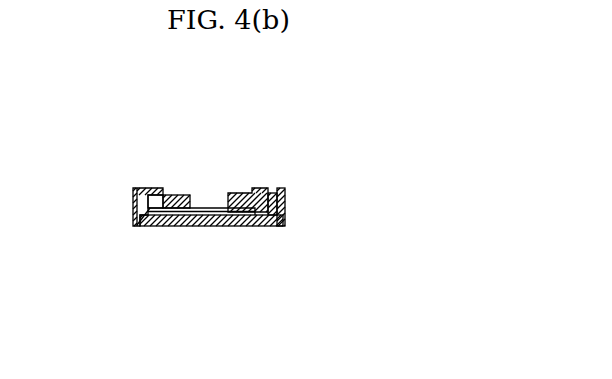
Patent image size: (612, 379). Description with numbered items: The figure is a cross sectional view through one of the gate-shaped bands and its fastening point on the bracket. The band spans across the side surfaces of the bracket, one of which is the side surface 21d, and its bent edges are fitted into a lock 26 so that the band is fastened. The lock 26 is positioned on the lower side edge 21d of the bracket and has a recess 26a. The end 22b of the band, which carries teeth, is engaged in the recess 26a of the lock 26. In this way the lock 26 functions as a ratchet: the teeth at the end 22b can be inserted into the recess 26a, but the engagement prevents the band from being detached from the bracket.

The lock 26 is at (128, 227).
The recess 26a is at (183, 195).
The side surface of the bracket 21d is at (285, 188).
The end of the band 22b is at (268, 221).